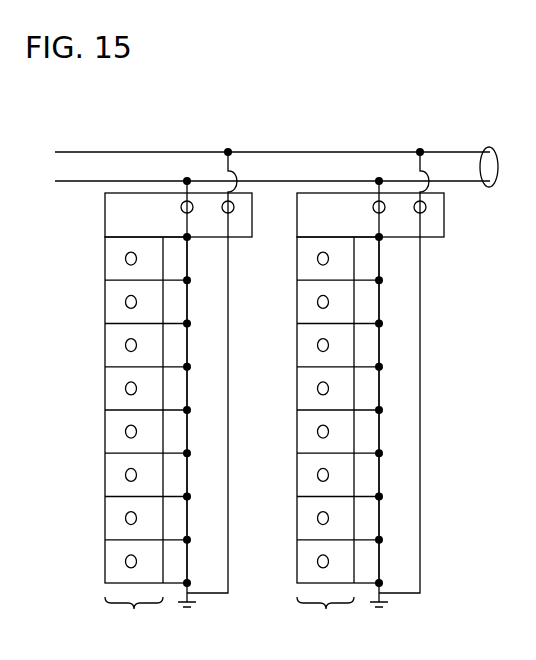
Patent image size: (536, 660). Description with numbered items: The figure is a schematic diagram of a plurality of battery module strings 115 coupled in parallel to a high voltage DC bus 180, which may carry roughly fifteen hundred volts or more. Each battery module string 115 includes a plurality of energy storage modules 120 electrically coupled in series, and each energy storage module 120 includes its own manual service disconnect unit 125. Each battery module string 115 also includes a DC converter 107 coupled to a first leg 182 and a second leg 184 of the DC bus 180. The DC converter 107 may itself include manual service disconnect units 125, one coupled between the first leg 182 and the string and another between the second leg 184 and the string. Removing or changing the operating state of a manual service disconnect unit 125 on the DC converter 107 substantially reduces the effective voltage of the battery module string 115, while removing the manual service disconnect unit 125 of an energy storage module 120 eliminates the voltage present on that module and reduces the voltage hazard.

The DC converter 107 is at (105, 214).
The battery module string 115 is at (229, 614).
The energy storage module 120 is at (105, 265).
The manual service disconnect unit 125 is at (223, 203).
The DC bus 180 is at (486, 148).
The first leg 182 is at (300, 181).
The second leg 184 is at (267, 152).